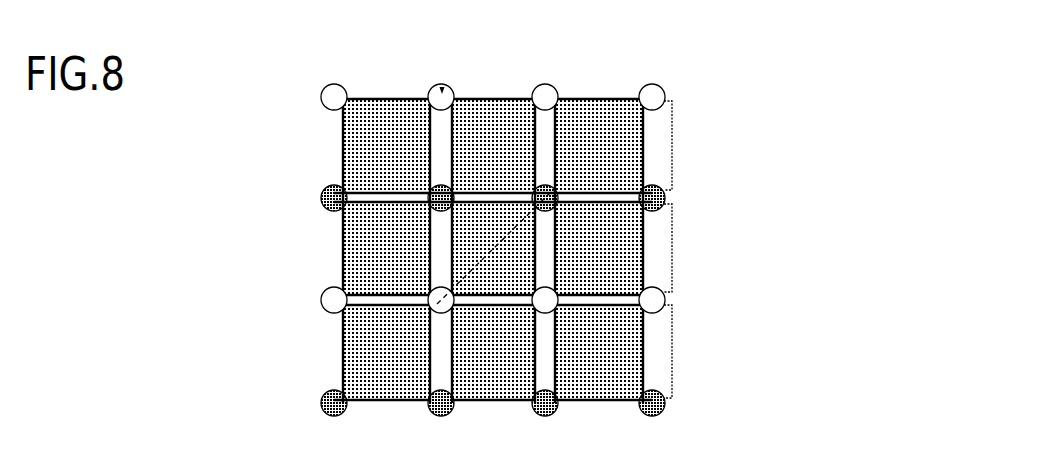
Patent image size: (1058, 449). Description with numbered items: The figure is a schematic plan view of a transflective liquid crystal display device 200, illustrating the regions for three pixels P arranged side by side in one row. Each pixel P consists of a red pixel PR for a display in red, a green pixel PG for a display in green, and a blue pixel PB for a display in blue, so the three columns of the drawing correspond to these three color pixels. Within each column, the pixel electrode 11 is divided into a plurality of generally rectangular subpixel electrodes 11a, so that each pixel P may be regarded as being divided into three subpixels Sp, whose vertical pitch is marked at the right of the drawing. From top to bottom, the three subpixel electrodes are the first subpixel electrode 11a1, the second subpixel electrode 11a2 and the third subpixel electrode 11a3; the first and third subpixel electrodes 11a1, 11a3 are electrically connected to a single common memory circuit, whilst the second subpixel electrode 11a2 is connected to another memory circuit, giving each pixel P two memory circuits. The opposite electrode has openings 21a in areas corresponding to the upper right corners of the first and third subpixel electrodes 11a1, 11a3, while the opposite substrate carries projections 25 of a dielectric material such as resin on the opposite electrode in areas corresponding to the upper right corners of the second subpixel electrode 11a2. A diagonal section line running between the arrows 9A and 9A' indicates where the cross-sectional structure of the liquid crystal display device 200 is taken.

The liquid crystal display device 200 is at (704, 80).
The pixel electrode 11 is at (203, 147).
The subpixel electrode 11a is at (428, 249).
The first subpixel electrode 11a1 is at (380, 146).
The second subpixel electrode 11a2 is at (377, 270).
The third subpixel electrode 11a3 is at (377, 352).
The opening 21a is at (442, 86).
The projection 25 is at (556, 97).
The line 9A-9A' 9A is at (469, 284).
The line 9A- 9A' is at (590, 169).
The subpixel Sp is at (681, 352).
The pixel P is at (493, 214).
The red pixel PR is at (388, 98).
The green pixel PG is at (489, 98).
The blue pixel PB is at (598, 98).